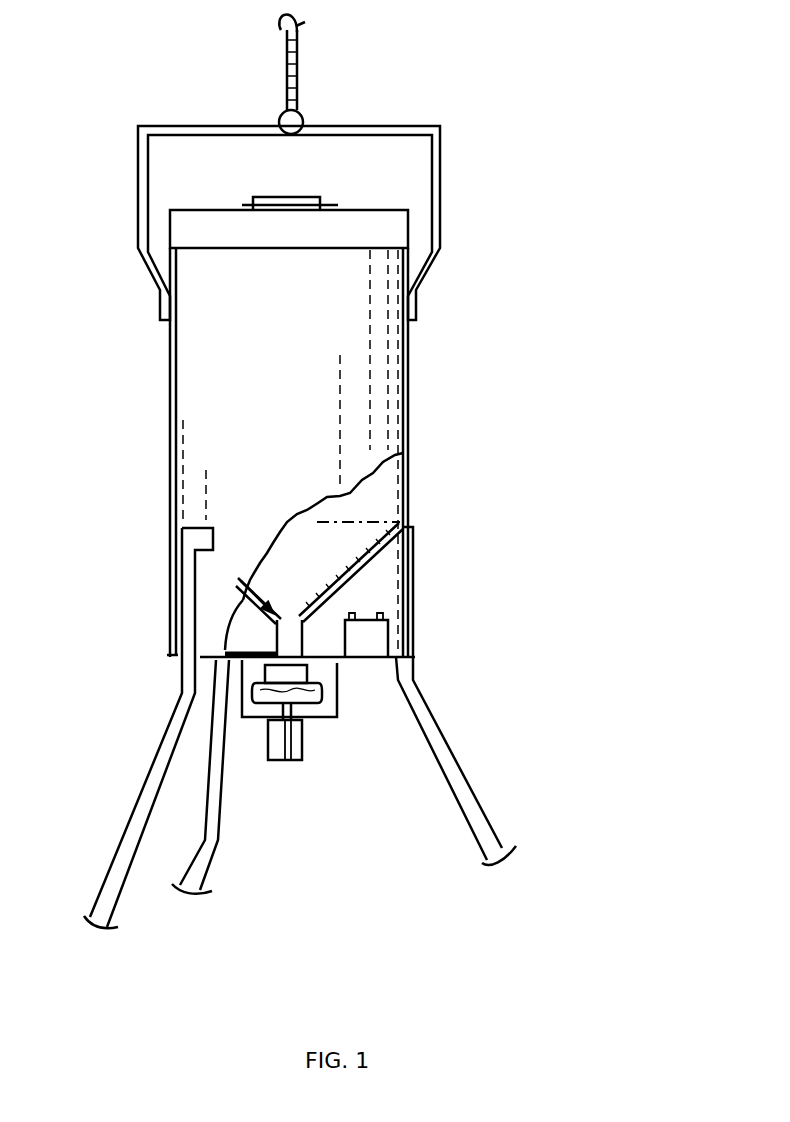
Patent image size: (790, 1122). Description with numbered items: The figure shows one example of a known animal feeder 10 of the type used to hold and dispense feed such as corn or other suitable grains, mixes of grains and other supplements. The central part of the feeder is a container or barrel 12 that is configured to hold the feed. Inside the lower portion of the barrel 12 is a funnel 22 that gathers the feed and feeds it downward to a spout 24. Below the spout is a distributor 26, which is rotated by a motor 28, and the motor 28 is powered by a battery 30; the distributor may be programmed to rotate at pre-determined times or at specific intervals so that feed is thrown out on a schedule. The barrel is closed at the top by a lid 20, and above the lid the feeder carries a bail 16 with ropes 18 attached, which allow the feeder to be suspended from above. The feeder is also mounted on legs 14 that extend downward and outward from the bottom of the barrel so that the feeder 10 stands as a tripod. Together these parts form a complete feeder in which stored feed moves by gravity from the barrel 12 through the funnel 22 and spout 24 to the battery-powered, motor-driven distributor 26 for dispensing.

The animal feeder 10 is at (562, 313).
The container or barrel 12 is at (410, 430).
The legs 14 is at (143, 790).
The bail 16 is at (441, 192).
The ropes 18 is at (298, 73).
The lid 20 is at (340, 211).
The funnel 22 is at (373, 560).
The spout 24 is at (290, 642).
The distributor 26 is at (323, 700).
The motor 28 is at (290, 762).
The battery 30 is at (367, 638).